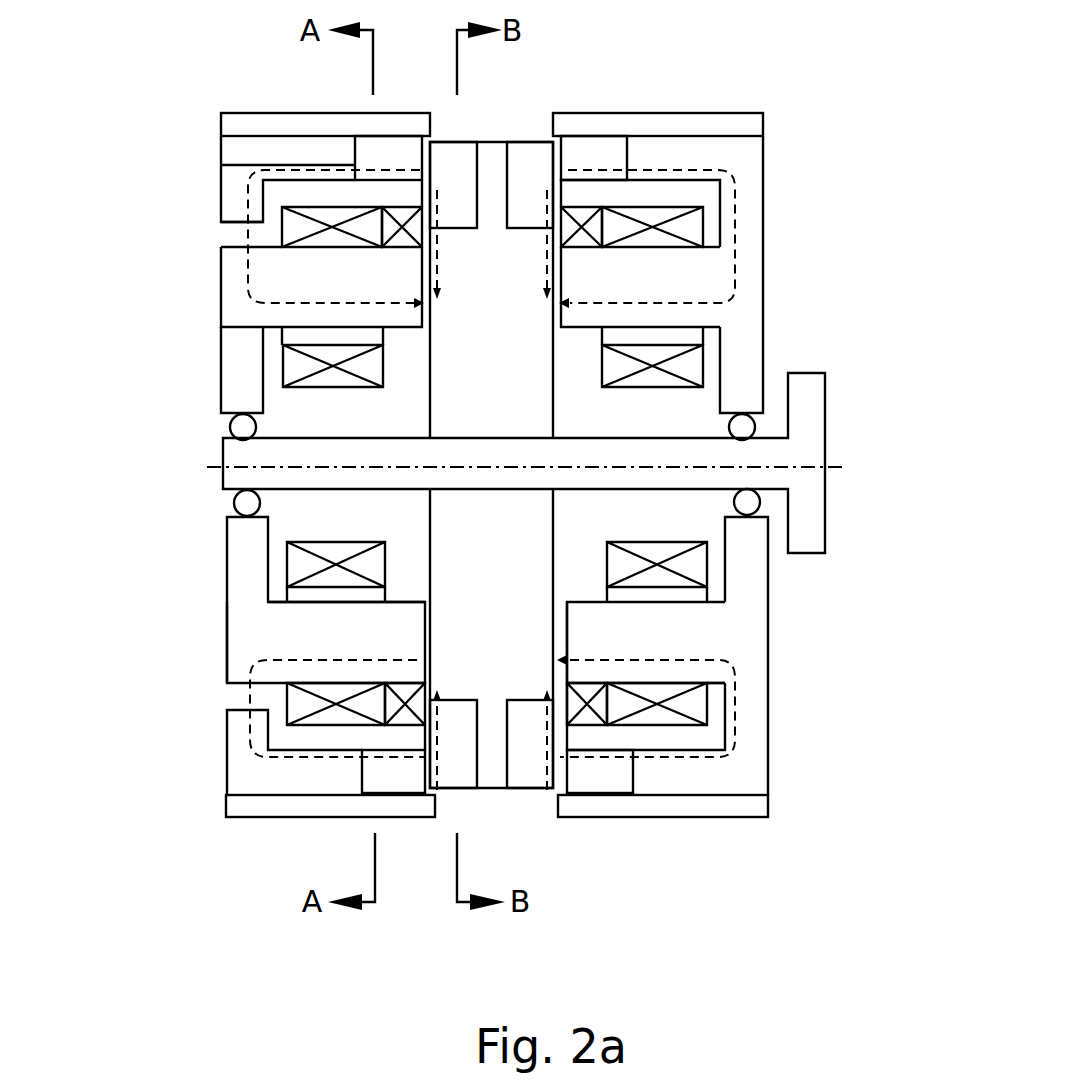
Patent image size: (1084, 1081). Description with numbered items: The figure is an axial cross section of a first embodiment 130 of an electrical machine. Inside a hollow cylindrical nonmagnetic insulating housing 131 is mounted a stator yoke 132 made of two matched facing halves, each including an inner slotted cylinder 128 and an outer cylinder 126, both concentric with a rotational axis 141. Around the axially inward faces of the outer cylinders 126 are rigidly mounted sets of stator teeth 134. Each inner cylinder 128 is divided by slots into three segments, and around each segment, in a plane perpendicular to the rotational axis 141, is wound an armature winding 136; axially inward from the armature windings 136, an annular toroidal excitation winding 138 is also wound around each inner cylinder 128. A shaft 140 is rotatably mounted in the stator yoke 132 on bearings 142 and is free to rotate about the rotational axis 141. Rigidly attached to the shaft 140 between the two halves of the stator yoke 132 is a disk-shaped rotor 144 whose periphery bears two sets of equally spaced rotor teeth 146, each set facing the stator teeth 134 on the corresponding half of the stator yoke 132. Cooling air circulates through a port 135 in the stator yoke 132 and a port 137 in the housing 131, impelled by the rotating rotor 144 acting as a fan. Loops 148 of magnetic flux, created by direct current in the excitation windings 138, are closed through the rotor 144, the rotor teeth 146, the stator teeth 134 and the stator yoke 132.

The outer cylinder 126 is at (342, 792).
The inner slotted cylinder 128 is at (276, 290).
The first embodiment of electrical machine 130 is at (831, 108).
The housing 131 is at (262, 130).
The stator yoke 132 is at (226, 167).
The stator teeth 134 is at (364, 167).
The port 135 is at (247, 232).
The armature winding 136 is at (292, 222).
The port 137 is at (492, 124).
The excitation winding 138 is at (588, 230).
The shaft 140 is at (808, 450).
The rotational axis 141 is at (220, 465).
The bearings 142 is at (232, 430).
The rotor 144 is at (464, 398).
The rotor teeth 146 is at (491, 465).
The loops of magnetic flux 148 is at (247, 285).